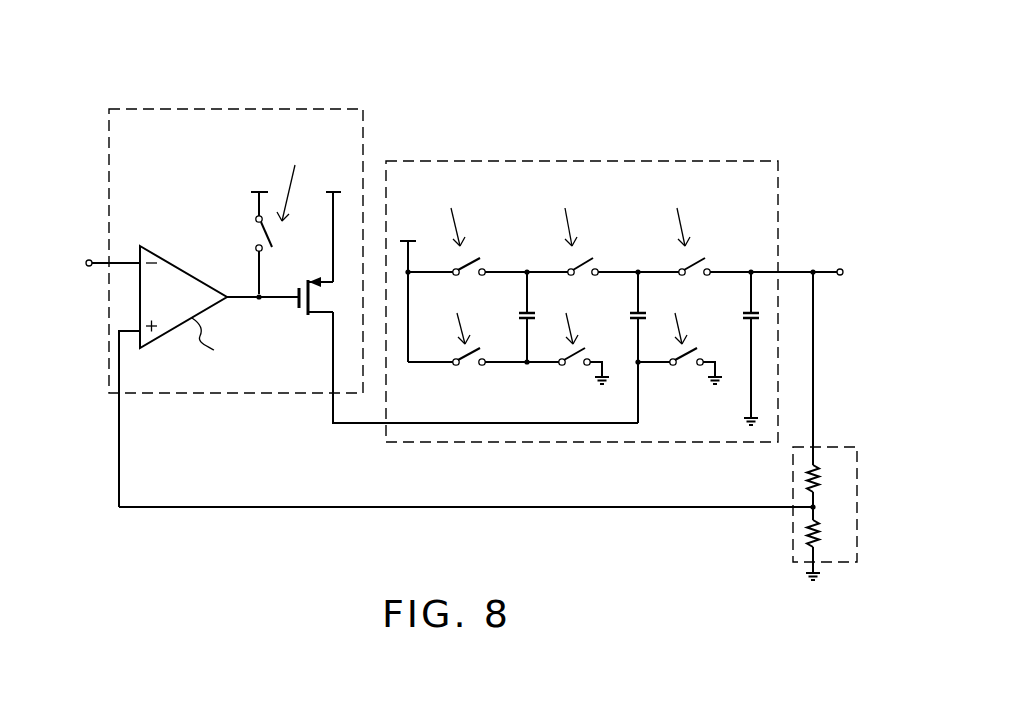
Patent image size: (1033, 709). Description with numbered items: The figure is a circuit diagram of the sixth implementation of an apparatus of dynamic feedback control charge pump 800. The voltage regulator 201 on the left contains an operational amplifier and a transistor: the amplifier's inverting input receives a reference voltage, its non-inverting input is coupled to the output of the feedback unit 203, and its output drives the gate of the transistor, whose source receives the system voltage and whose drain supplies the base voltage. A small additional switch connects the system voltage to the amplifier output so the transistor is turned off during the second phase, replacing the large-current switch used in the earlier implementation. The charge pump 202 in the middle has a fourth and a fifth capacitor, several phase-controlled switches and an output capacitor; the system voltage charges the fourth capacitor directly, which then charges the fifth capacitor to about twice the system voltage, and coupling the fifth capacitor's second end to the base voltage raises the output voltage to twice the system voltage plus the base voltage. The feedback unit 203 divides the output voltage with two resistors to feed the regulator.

The voltage regulator 201 is at (176, 108).
The charge pump 202 is at (494, 160).
The feedback unit 203 is at (792, 532).
The apparatus of dynamic feedback control charge pump 800 is at (838, 646).